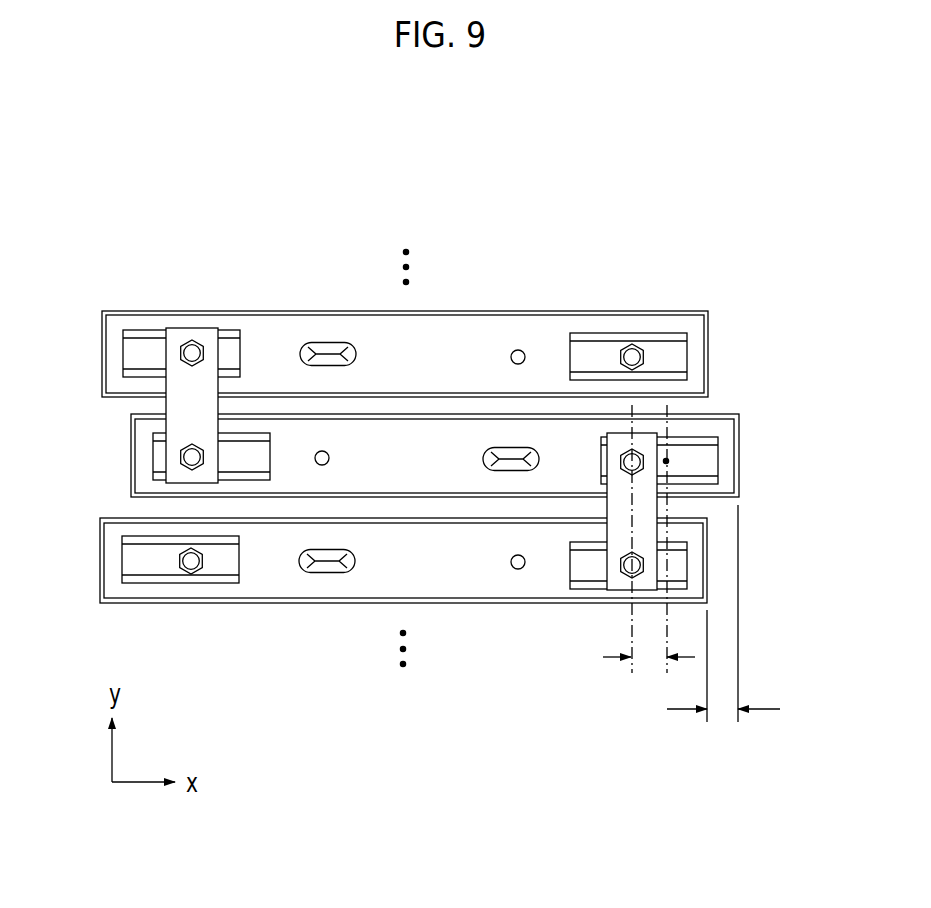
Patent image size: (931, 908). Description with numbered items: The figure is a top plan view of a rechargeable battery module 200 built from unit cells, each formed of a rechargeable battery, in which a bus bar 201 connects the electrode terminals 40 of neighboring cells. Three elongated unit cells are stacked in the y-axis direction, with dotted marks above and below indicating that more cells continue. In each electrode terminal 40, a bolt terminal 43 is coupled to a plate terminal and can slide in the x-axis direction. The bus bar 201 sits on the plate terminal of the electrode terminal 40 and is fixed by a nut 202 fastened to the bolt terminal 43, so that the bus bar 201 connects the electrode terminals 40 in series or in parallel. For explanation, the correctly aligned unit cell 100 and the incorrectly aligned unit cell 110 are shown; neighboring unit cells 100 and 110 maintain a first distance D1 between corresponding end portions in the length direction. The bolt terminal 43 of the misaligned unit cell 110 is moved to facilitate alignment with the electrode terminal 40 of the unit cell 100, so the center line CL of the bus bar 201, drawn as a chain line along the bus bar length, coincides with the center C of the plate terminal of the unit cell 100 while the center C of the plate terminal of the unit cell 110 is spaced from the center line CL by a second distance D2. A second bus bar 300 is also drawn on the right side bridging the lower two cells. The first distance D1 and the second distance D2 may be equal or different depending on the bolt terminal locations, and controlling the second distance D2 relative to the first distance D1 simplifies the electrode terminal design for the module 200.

The rechargeable battery module 200 is at (410, 200).
The unit cell aligned in the wrong location 110 is at (451, 409).
The unit cell aligned in the right location 100 is at (489, 615).
The bus bar 201 is at (192, 333).
The nut 202 is at (178, 457).
The connection plate 300 is at (645, 509).
The bolt terminal 43 is at (640, 455).
The electrode terminal 40 is at (729, 487).
The center of plate terminal C is at (668, 461).
The center line of bus bar CL is at (627, 578).
The first distance D1 is at (723, 629).
The second distance D2 is at (649, 680).